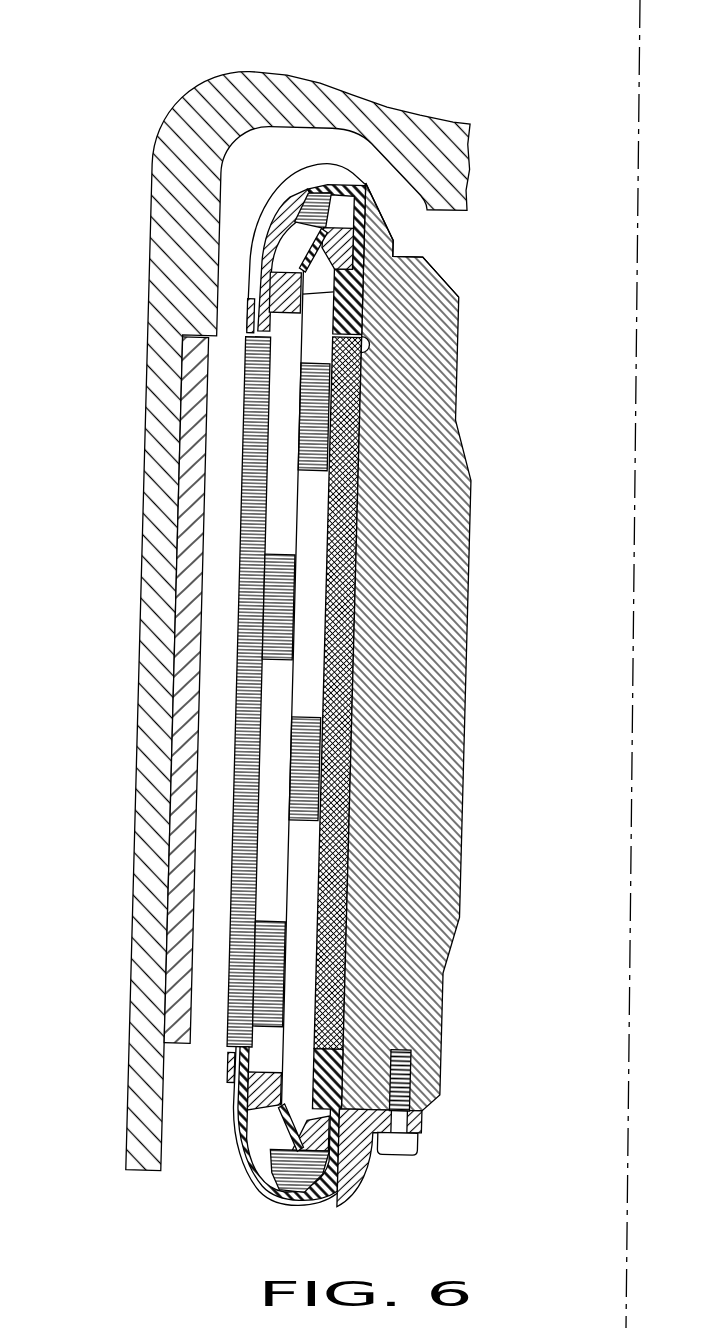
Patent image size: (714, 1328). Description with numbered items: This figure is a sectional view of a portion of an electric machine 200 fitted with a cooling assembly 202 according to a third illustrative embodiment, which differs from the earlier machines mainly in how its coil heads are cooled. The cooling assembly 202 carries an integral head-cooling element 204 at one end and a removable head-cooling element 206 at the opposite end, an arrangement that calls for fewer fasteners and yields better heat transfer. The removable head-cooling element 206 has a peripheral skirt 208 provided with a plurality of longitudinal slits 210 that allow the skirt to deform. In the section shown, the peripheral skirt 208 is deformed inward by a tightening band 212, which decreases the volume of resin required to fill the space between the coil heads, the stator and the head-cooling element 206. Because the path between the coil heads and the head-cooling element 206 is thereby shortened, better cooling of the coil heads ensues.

The electric machine 200 is at (115, 123).
The cooling assembly 202 is at (474, 541).
The integral head-cooling element 204 is at (384, 228).
The removable head-cooling element 206 is at (376, 1187).
The peripheral skirt 208 is at (247, 1121).
The longitudinal slits 210 is at (253, 1086).
The tightening band 212 is at (245, 1064).